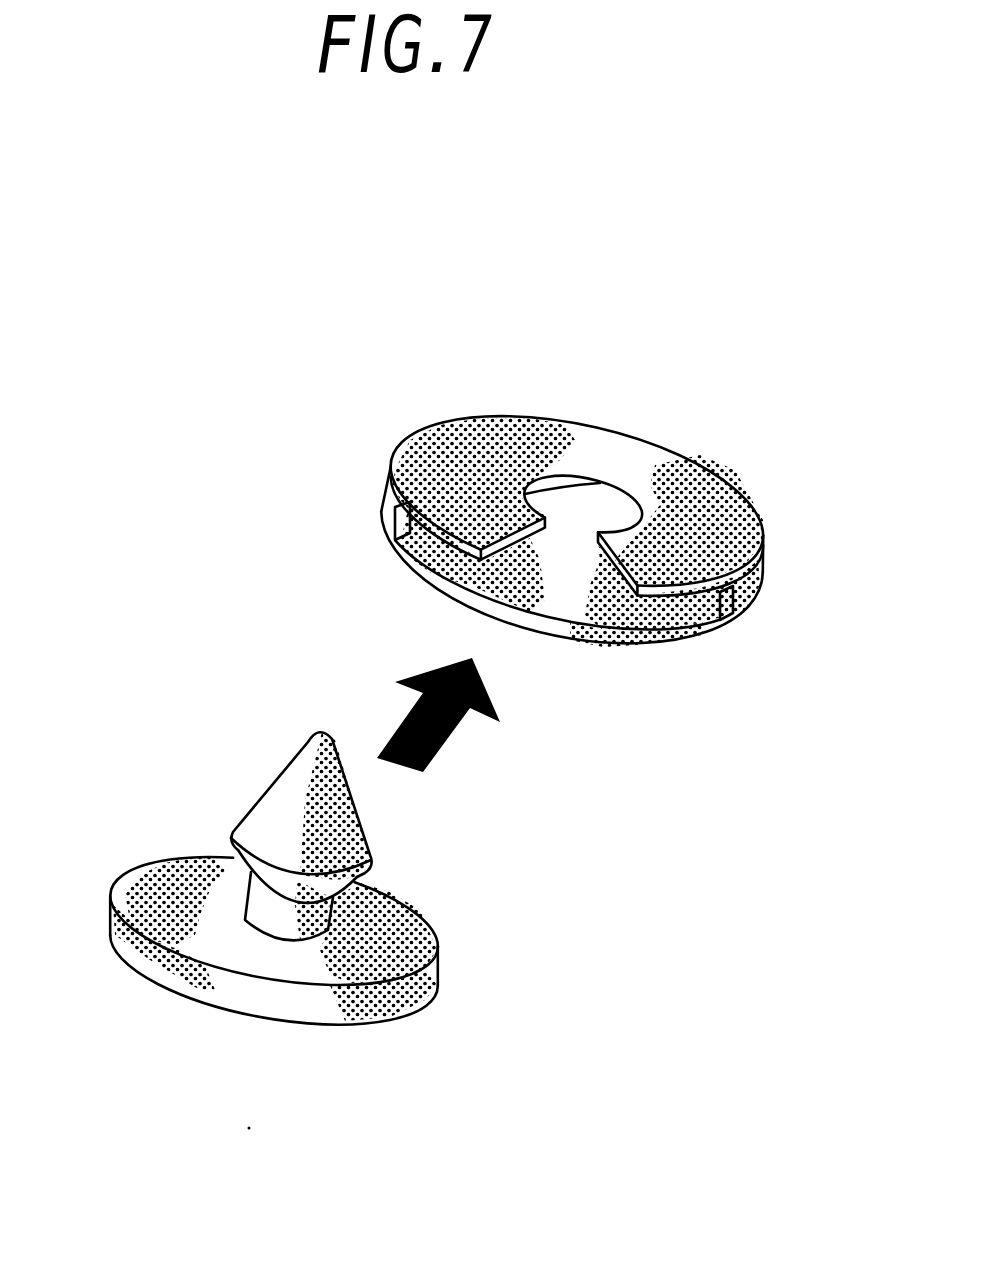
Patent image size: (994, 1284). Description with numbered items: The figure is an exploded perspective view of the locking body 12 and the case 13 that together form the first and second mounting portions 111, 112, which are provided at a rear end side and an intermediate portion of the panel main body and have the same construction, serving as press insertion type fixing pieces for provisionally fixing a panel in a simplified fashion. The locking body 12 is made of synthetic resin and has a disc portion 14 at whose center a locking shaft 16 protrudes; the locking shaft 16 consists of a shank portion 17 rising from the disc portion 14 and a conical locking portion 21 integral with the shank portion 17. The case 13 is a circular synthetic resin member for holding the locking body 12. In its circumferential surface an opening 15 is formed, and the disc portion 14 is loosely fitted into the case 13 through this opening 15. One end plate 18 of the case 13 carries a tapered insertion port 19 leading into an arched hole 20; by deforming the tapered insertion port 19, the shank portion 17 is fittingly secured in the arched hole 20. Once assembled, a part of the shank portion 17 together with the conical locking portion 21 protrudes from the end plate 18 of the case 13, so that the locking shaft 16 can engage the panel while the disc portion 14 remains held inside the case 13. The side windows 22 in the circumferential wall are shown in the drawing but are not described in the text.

The first mounting portion 111 is at (448, 402).
The second mounting portion 112 is at (544, 493).
The locking body 12 is at (155, 848).
The case 13 is at (708, 443).
The disc portion 14 is at (302, 968).
The opening 15 is at (662, 610).
The locking shaft 16 is at (367, 823).
The shank portion 17 is at (270, 917).
The end plate 18 is at (542, 448).
The tapered insertion port 19 is at (602, 556).
The arched hole 20 is at (593, 484).
The conical locking portion 21 is at (273, 790).
The side window 22 is at (717, 638).